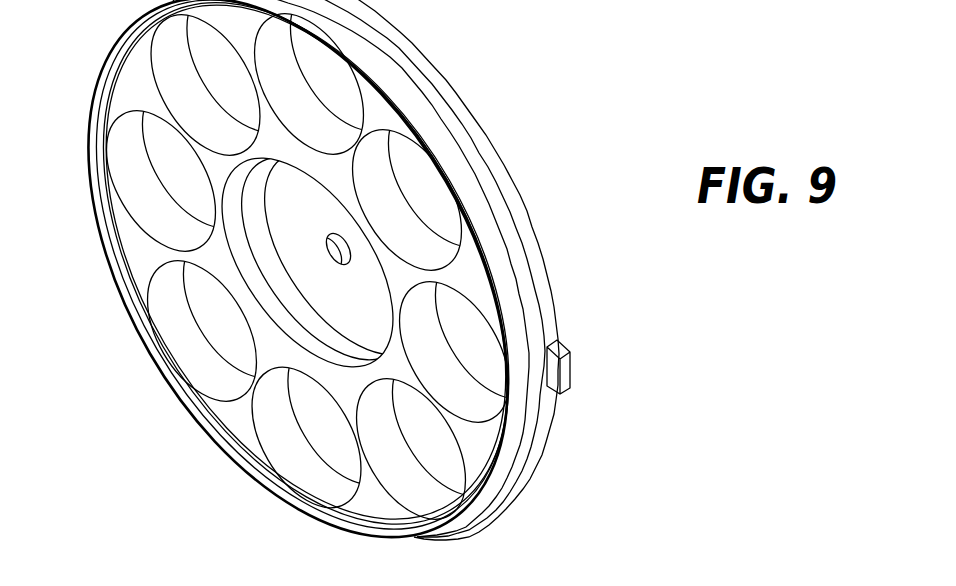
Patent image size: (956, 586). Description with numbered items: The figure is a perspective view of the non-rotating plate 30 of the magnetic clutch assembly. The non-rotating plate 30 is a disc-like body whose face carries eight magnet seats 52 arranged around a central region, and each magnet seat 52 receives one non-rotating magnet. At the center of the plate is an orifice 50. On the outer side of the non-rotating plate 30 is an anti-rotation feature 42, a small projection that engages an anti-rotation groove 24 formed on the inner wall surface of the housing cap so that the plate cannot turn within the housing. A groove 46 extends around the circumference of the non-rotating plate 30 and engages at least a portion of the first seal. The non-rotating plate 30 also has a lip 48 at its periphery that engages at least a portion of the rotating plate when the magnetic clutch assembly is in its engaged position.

The non-rotating plate 30 is at (342, 293).
The magnet seat 52 is at (313, 88).
The orifice 50 is at (337, 248).
The anti-rotation feature 42 is at (563, 378).
The groove 46 is at (537, 443).
The lip 48 is at (318, 522).
The anti-rotation groove 24 is at (438, 585).